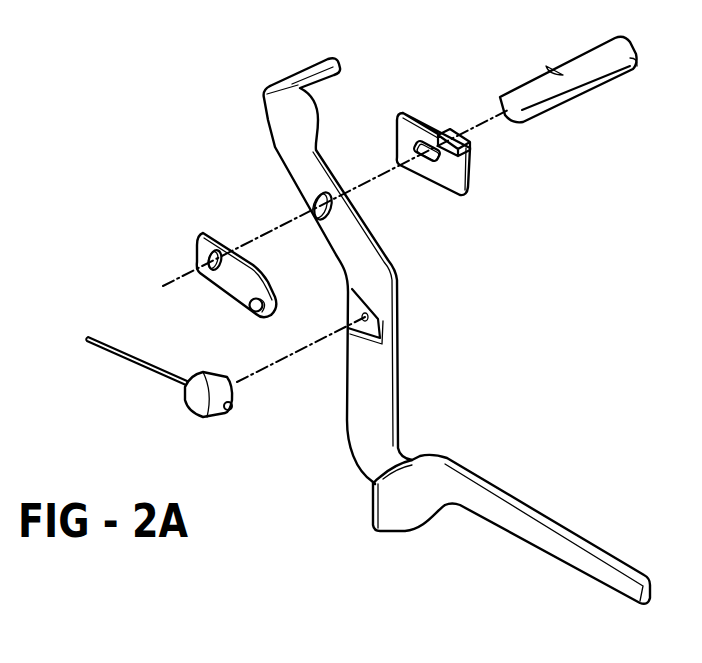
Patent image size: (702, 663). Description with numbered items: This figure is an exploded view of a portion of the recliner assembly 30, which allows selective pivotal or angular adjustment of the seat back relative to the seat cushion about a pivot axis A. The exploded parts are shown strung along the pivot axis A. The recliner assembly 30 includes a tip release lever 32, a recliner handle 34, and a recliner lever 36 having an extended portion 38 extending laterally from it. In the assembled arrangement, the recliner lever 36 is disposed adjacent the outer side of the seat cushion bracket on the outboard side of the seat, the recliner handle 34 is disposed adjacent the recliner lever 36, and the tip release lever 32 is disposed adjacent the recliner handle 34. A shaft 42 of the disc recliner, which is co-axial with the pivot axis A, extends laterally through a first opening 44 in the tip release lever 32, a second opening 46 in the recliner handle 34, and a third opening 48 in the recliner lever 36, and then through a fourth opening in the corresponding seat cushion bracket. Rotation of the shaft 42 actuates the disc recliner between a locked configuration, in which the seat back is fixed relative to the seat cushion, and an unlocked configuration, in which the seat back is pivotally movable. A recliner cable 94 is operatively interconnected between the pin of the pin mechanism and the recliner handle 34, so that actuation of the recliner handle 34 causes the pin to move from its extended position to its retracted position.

The recliner assembly 30 is at (146, 142).
The tip release lever 32 is at (197, 249).
The recliner handle 34 is at (400, 370).
The recliner lever 36 is at (412, 110).
The extended portion 38 is at (471, 152).
The shaft 42 is at (590, 92).
The first opening 44 is at (203, 233).
The second opening 46 is at (318, 212).
The third opening 48 is at (420, 161).
The recliner cable 94 is at (133, 363).
The pivot axis A is at (176, 278).